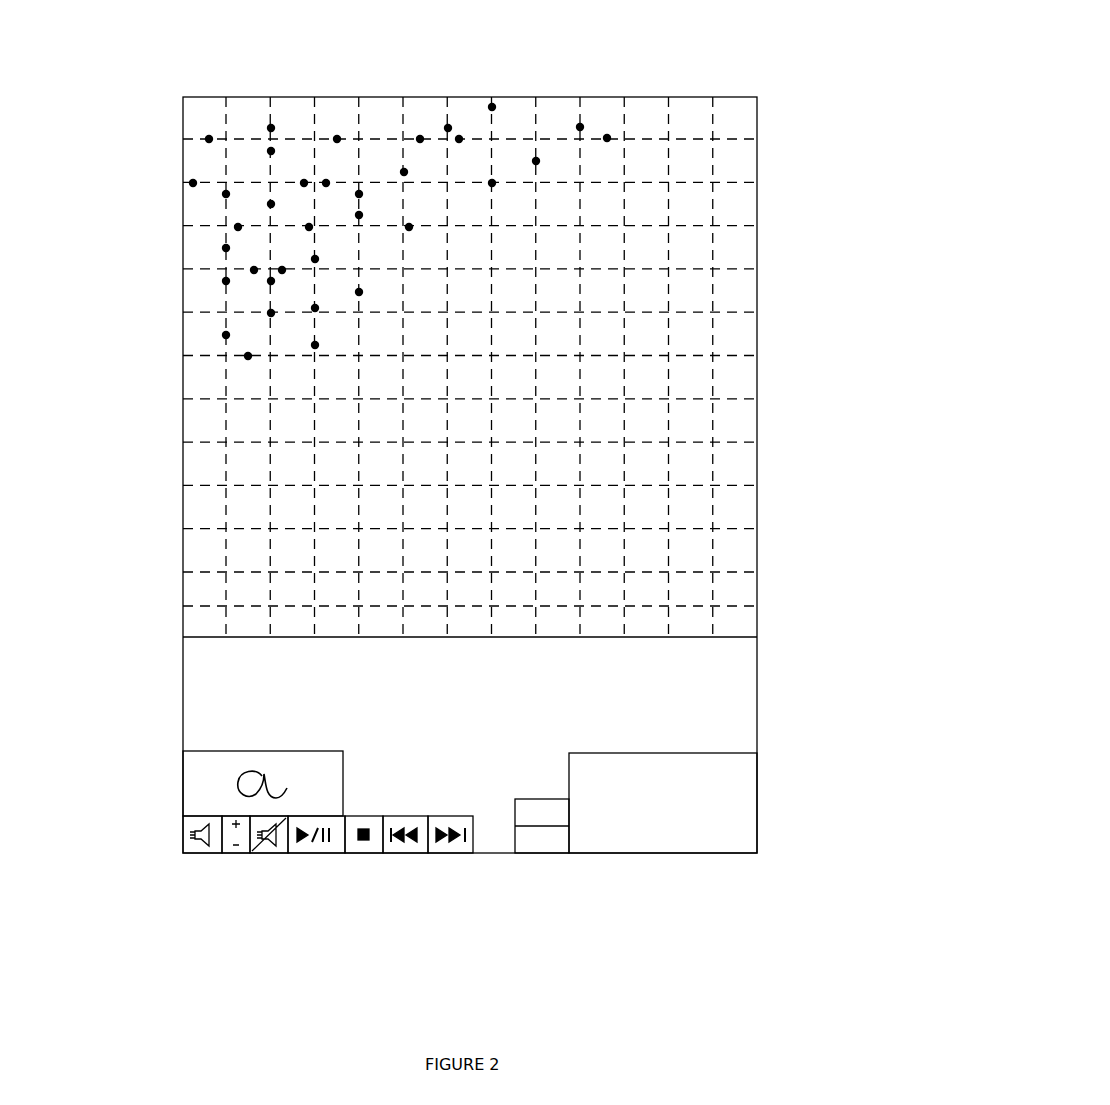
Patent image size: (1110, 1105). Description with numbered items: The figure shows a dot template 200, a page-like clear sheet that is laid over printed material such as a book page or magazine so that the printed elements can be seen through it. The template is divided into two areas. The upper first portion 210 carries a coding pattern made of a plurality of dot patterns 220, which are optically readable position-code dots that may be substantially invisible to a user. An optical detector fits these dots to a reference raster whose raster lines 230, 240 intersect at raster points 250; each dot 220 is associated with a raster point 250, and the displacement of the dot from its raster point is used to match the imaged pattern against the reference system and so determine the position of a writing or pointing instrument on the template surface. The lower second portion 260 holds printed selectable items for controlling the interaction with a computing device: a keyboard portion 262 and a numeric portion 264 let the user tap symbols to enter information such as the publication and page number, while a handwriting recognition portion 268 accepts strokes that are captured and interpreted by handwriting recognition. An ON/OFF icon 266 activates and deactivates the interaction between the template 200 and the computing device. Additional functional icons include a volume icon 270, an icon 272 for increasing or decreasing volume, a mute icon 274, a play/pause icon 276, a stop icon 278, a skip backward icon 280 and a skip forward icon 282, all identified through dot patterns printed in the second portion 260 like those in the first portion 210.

The dot template 200 is at (79, 23).
The first portion 210 is at (449, 345).
The dot patterns 220 is at (400, 211).
The raster line 230 is at (419, 345).
The raster line 240 is at (419, 123).
The raster point 250 is at (252, 345).
The second portion 260 is at (467, 754).
The keyboard portion 262 is at (203, 687).
The numeric portion 264 is at (760, 808).
The ON/OFF icon 266 is at (547, 854).
The handwriting recognition portion 268 is at (185, 778).
The volume icon 270 is at (183, 842).
The volume increase/decrease icon 272 is at (232, 855).
The mute icon 274 is at (267, 853).
The play/pause icon 276 is at (314, 855).
The stop icon 278 is at (360, 854).
The skip backward icon 280 is at (405, 854).
The skip forward icon 282 is at (460, 854).